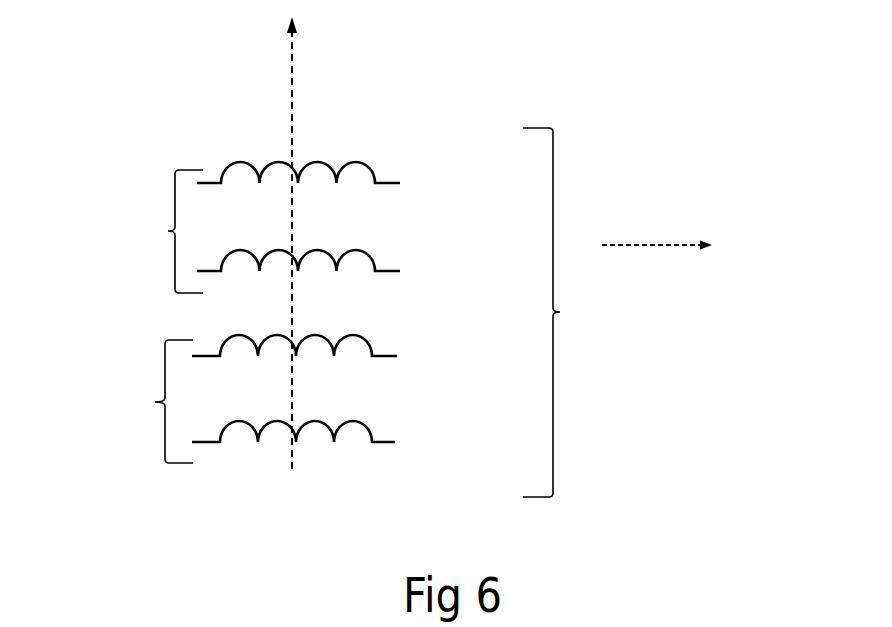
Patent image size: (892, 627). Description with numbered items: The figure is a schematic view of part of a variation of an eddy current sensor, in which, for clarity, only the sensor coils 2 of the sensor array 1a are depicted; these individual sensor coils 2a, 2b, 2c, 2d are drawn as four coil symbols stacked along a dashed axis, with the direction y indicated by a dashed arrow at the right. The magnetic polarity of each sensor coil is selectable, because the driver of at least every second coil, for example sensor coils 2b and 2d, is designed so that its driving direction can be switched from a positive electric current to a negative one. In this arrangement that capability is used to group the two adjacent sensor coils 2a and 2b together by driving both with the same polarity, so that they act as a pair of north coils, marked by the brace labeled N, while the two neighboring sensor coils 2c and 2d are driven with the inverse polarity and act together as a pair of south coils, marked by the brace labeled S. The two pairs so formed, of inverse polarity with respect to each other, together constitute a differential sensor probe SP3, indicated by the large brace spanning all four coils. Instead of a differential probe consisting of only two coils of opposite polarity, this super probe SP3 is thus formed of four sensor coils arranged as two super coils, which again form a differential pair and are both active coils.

The sensor array 1a is at (355, 243).
The sensor coil 2 is at (332, 254).
The sensor coil 2a is at (333, 150).
The sensor coil 2b is at (339, 244).
The sensor coil 2c is at (335, 331).
The sensor coil 2d is at (334, 420).
The north polarity N is at (168, 231).
The south polarity S is at (155, 402).
The differential sensor probe SP3 is at (560, 312).
The y axis y is at (678, 245).